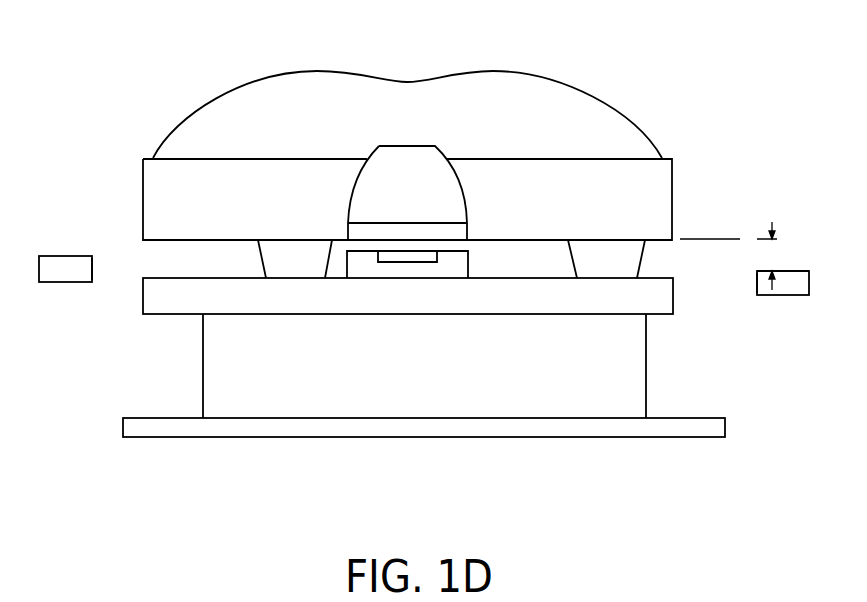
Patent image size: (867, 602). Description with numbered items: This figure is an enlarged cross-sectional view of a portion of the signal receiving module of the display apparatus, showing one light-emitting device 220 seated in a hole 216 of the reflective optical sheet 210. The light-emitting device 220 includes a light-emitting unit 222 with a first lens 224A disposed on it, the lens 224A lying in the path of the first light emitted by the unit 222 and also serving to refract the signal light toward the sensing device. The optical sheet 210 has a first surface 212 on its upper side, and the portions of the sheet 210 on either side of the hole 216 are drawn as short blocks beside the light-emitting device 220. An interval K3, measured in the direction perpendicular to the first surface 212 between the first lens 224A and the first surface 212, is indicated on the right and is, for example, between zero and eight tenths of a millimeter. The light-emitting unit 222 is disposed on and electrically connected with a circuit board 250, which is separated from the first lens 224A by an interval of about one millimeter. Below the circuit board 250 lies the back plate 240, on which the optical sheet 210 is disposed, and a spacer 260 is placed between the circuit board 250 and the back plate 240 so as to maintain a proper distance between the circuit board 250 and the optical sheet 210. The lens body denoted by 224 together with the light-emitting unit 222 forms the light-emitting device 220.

The optical sheet 210 is at (55, 262).
The first surface 212 is at (795, 278).
The hole 216 is at (93, 277).
The light-emitting device 220 is at (475, 259).
The light-emitting unit 222 is at (452, 268).
The second optical portion 224 is at (595, 113).
The first lens 224A is at (475, 98).
The back plate 240 is at (668, 428).
The circuit board 250 is at (155, 302).
The spacer 260 is at (268, 380).
The interval K3 is at (733, 256).